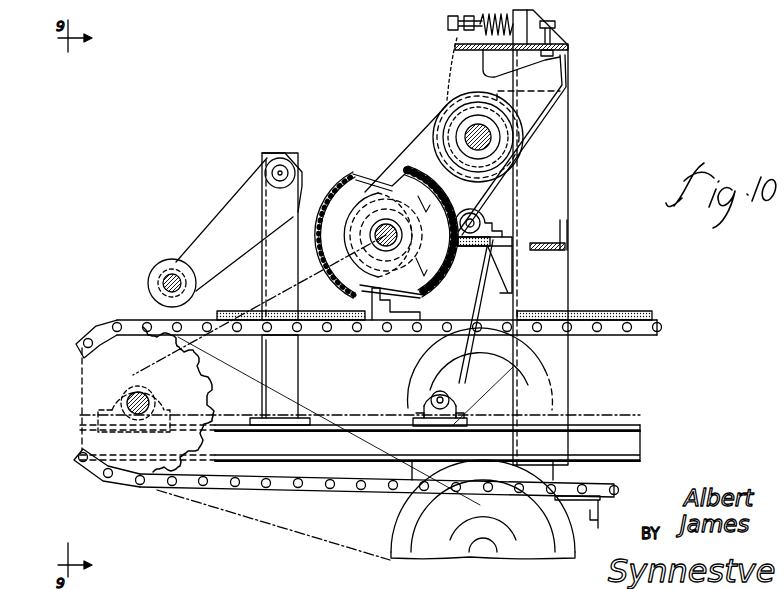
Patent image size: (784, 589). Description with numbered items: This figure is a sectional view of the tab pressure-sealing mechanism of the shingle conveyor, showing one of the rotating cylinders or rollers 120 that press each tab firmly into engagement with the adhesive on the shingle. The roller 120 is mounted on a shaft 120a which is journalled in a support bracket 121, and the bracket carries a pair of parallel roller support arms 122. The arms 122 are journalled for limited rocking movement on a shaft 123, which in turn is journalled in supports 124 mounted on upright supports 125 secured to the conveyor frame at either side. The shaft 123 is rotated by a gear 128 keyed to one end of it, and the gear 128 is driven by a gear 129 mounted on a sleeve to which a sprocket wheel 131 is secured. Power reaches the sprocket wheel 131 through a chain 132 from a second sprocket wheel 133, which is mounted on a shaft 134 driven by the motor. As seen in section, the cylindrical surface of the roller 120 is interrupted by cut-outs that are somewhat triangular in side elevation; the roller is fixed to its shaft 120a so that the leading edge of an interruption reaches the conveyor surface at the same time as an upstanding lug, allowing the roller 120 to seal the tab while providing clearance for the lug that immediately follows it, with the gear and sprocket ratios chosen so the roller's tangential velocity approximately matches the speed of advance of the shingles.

The roller 120 is at (356, 185).
The shaft 120a is at (374, 299).
The support bracket 121 is at (440, 58).
The roller support arm 122 is at (436, 158).
The shaft 123 is at (490, 137).
The support 124 is at (568, 80).
The upright support 125 is at (562, 112).
The gear 128 is at (388, 234).
The gear 129 is at (500, 212).
The sprocket wheel 131 is at (479, 299).
The chain 132 is at (283, 288).
The second sprocket wheel 133 is at (122, 380).
The shaft 134 is at (140, 413).